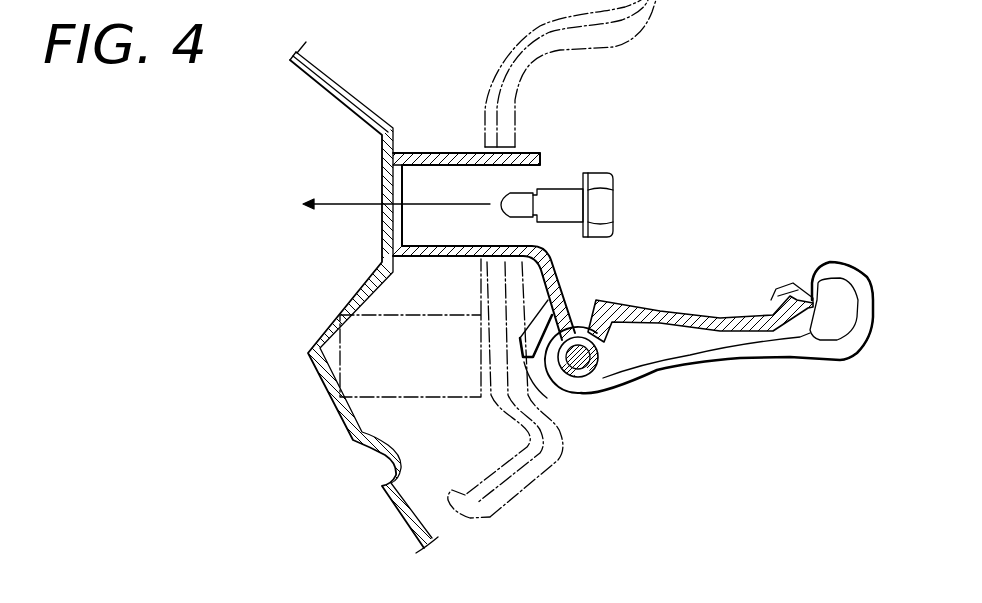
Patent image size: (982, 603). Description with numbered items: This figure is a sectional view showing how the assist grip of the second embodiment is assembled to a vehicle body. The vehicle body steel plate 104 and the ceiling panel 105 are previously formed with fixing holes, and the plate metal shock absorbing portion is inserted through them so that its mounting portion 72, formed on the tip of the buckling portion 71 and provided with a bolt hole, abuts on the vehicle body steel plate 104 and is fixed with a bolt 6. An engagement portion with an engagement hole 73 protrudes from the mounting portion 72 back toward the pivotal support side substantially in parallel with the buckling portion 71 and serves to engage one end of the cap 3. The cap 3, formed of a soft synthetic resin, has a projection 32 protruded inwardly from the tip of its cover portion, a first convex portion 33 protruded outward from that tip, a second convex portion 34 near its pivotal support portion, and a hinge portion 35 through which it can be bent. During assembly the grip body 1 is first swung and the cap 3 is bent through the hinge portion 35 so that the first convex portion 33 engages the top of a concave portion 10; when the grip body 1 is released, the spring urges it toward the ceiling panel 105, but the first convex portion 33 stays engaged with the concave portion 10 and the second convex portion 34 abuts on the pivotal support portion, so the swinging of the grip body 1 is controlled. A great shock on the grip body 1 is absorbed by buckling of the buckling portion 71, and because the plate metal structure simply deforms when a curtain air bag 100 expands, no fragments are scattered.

The grip body 1 is at (690, 362).
The cap 3 is at (677, 313).
The bolt 6 is at (603, 202).
The concave portion 10 is at (618, 352).
The projection 32 is at (773, 290).
The first convex portion 33 is at (812, 340).
The second convex portion 34 is at (576, 333).
The hinge portion 35 is at (587, 307).
The buckling portion 71 is at (447, 258).
The mounting portion 72 is at (405, 176).
The engagement hole 73 is at (520, 150).
The curtain air bag 100 is at (388, 367).
The vehicle body steel plate 104 is at (331, 79).
The ceiling panel 105 is at (630, 33).